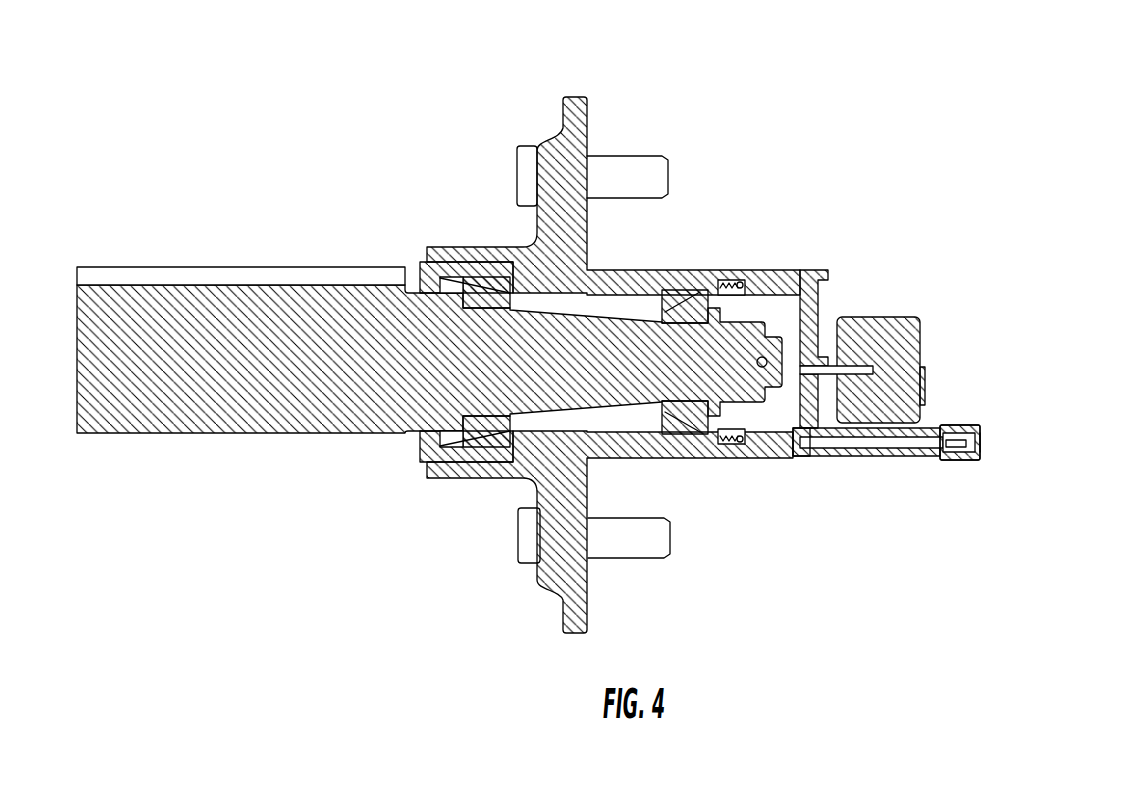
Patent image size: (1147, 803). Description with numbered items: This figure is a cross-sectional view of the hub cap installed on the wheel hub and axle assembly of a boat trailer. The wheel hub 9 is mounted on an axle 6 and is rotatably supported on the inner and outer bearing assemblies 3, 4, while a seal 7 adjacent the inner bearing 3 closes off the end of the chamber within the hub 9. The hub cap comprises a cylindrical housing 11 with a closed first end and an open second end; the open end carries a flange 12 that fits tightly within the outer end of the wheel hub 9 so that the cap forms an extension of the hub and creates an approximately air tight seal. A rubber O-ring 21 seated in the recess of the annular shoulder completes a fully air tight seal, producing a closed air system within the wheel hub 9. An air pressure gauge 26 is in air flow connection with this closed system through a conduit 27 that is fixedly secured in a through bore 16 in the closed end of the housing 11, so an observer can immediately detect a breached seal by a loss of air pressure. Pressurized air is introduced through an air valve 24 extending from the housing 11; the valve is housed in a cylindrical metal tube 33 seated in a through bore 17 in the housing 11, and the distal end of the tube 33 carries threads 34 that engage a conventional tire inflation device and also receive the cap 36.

The axle 6 is at (412, 388).
The seal 7 is at (447, 266).
The bearing assembly 3 is at (483, 288).
The wheel hub 9 is at (646, 270).
The cylindrical housing 11 is at (773, 460).
The bearing assembly 4 is at (692, 292).
The flange 12 is at (704, 290).
The O-ring 21 is at (742, 280).
The conduit 27 is at (826, 356).
The air pressure gauge 26 is at (880, 316).
The through bore 16 is at (800, 368).
The cylindrical metal tube 33 is at (893, 457).
The through bore 17 is at (793, 432).
The threads 34 is at (960, 461).
The cap 36 is at (981, 450).
The air valve 24 is at (963, 428).